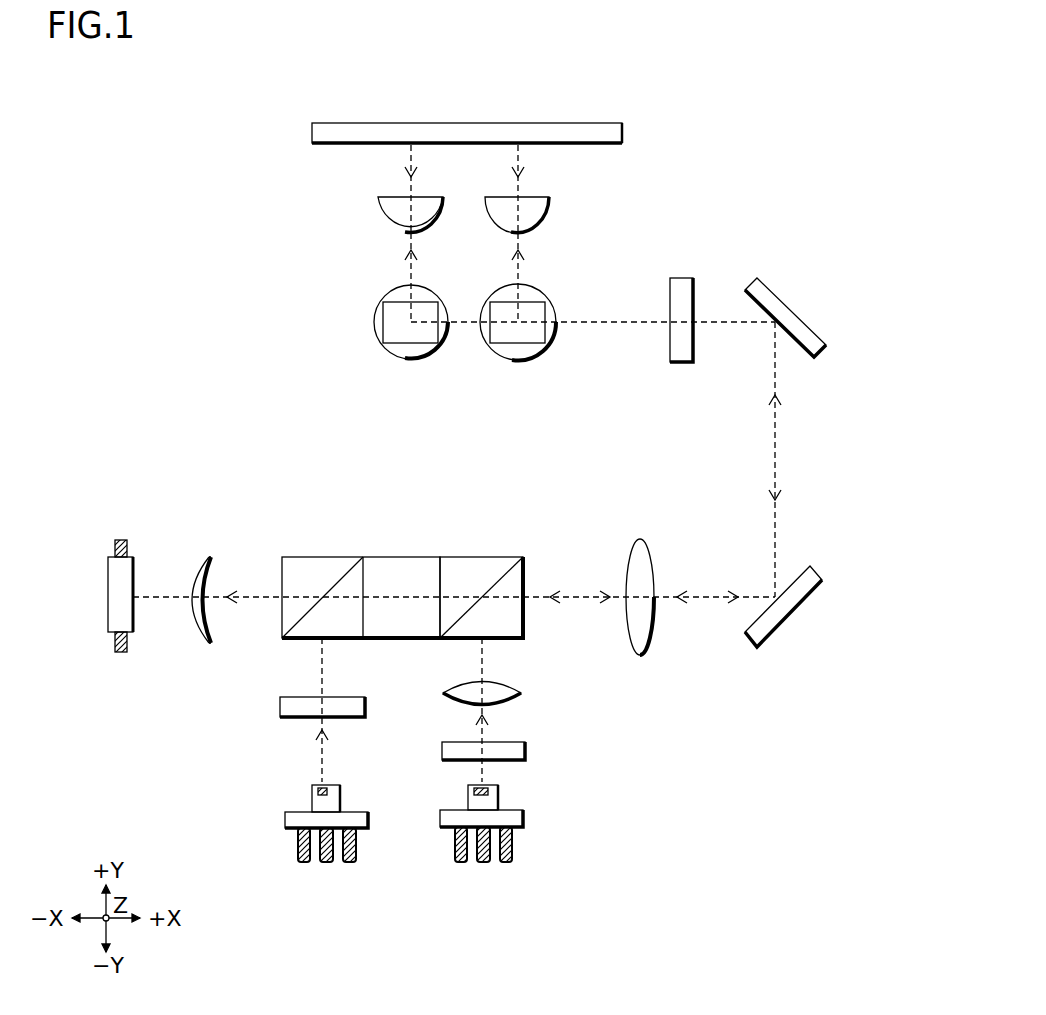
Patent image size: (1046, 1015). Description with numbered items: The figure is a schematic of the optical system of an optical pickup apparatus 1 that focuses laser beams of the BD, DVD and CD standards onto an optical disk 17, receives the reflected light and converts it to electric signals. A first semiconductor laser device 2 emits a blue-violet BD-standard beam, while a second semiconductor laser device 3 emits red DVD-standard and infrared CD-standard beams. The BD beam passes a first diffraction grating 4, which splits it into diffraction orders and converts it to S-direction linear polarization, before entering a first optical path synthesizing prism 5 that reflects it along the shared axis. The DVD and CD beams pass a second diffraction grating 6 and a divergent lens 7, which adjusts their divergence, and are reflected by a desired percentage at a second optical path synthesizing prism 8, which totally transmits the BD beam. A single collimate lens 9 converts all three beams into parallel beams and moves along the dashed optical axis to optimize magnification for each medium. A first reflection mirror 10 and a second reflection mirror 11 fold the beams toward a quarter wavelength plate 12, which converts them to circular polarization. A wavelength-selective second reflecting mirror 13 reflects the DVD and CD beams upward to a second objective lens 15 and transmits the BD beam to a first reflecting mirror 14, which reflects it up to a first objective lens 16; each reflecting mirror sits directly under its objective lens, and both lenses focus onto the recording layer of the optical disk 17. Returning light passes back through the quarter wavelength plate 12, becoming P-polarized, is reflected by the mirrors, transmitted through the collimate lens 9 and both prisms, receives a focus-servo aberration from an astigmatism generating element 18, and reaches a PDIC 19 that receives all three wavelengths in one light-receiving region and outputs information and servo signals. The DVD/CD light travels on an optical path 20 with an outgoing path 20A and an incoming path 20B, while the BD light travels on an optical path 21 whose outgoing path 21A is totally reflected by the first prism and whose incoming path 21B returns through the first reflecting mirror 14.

The optical pickup apparatus 1 is at (479, 87).
The first semiconductor laser device 2 is at (285, 818).
The second semiconductor laser device 3 is at (524, 818).
The first diffraction grating 4 is at (280, 708).
The first optical path synthesizing prism 5 is at (316, 557).
The second diffraction grating 6 is at (526, 752).
The divergent lens 7 is at (522, 692).
The second optical path synthesizing prism 8 is at (480, 557).
The collimate lens 9 is at (637, 550).
The first reflection mirror 10 is at (796, 606).
The second reflection mirror 11 is at (792, 310).
The quarter wavelength plate 12 is at (683, 362).
The second reflecting mirror 13 is at (521, 361).
The first reflecting mirror 14 is at (407, 360).
The second objective lens 15 is at (549, 207).
The first objective lens 16 is at (378, 205).
The optical disk 17 is at (623, 133).
The astigmatism generating element 18 is at (208, 556).
The PDIC 19 is at (118, 540).
The optical path 20 is at (480, 774).
The outgoing path 20A is at (520, 268).
The incoming path 20B is at (520, 188).
The optical path 21 is at (320, 758).
The outgoing path 21A is at (413, 272).
The incoming path 21B is at (413, 192).